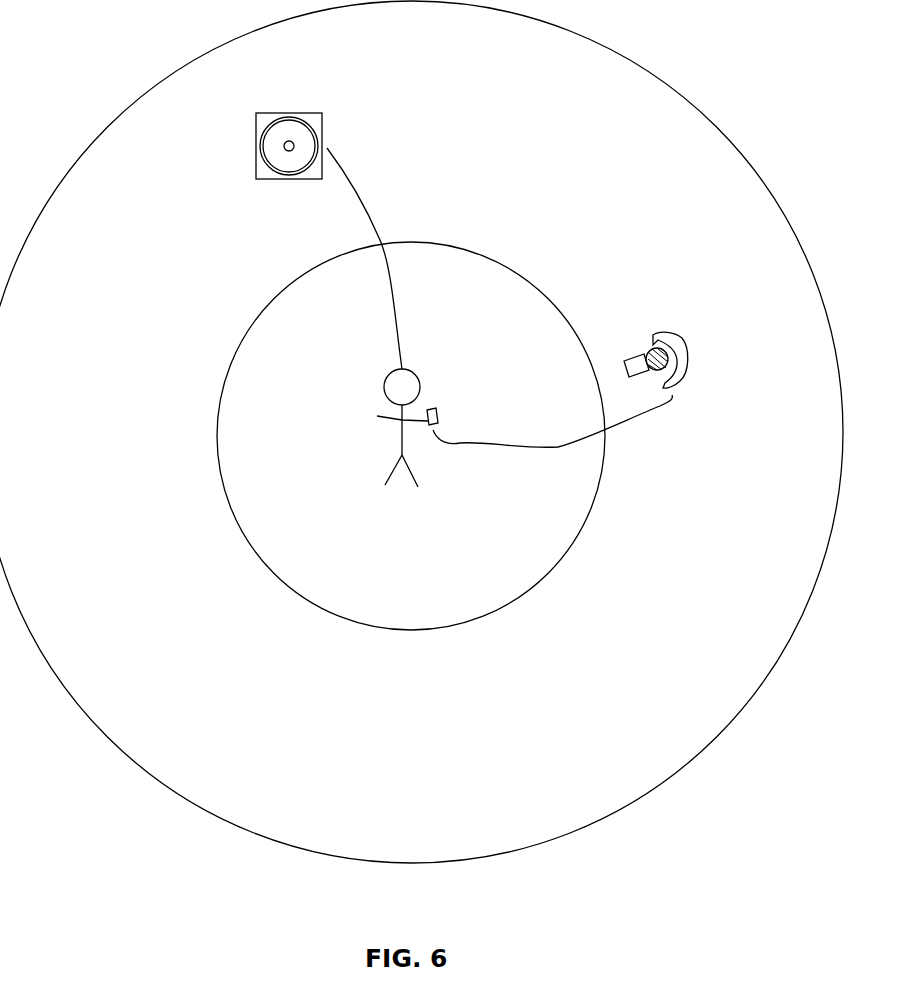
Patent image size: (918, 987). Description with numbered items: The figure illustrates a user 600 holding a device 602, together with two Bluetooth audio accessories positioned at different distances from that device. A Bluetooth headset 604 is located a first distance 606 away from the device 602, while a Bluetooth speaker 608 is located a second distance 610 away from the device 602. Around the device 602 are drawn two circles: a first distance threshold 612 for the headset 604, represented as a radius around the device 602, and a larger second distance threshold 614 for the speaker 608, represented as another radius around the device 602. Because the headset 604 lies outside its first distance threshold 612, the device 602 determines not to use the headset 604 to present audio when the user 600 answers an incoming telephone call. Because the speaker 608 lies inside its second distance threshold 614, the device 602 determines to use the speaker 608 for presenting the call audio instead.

The user 600 is at (384, 381).
The device 602 is at (440, 415).
The Bluetooth headset 604 is at (683, 334).
The first distance 606 is at (552, 437).
The Bluetooth speaker 608 is at (323, 130).
The second distance 610 is at (384, 243).
The first distance threshold 612 is at (510, 266).
The second distance threshold 614 is at (597, 38).